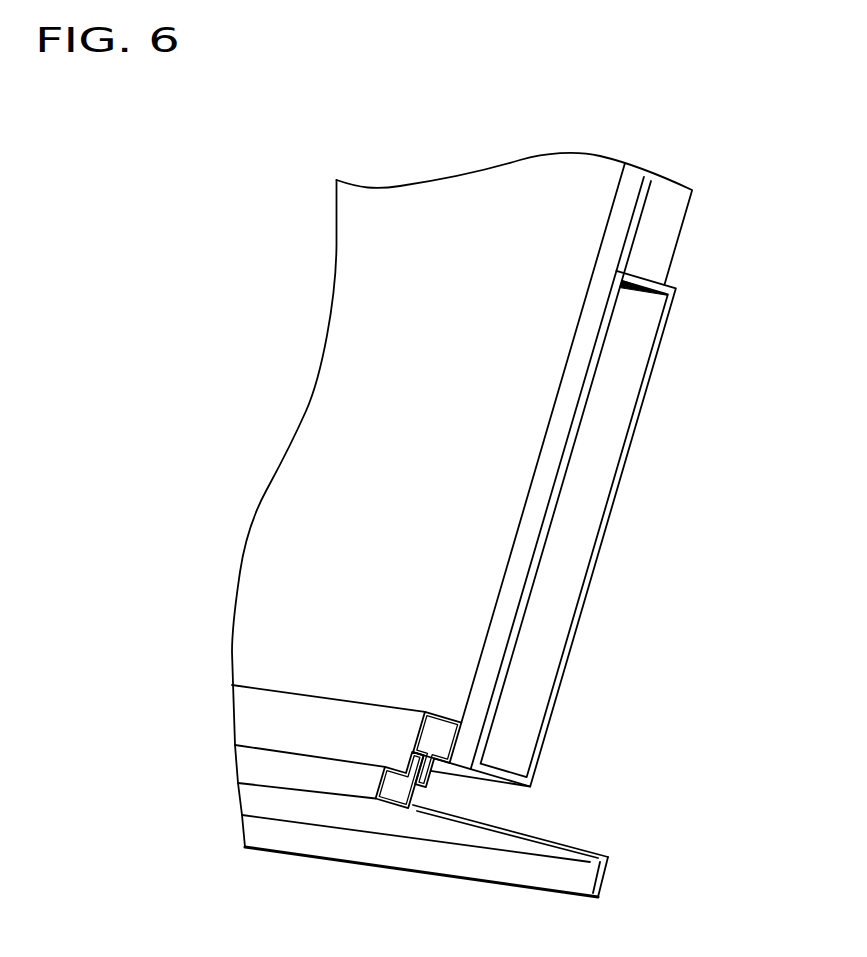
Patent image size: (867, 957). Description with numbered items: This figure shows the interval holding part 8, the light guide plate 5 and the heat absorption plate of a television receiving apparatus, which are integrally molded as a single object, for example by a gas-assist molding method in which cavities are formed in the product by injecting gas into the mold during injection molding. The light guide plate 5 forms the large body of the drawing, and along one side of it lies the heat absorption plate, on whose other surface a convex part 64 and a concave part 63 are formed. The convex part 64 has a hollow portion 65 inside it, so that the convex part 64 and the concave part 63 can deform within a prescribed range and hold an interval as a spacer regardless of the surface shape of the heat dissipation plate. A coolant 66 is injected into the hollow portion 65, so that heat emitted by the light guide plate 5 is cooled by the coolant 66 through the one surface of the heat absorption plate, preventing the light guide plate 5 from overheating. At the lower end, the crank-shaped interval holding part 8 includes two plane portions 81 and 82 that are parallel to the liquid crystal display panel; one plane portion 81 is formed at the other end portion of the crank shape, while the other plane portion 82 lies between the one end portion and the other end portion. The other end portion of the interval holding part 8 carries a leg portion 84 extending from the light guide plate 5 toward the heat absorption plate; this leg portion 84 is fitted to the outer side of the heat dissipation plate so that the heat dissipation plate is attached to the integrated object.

The light guide plate 5 is at (460, 193).
The concave part 63 is at (650, 281).
The convex part 64 is at (658, 348).
The hollow portion 65 is at (630, 398).
The coolant 66 is at (588, 513).
The plane portion 82 is at (423, 731).
The plane portion 81 is at (392, 770).
The interval holding part 8 is at (397, 803).
The leg portion 84 is at (585, 854).